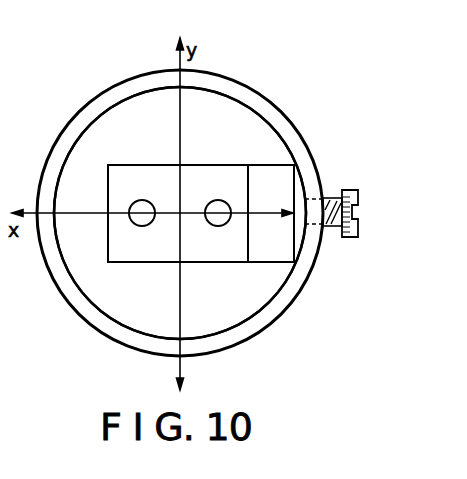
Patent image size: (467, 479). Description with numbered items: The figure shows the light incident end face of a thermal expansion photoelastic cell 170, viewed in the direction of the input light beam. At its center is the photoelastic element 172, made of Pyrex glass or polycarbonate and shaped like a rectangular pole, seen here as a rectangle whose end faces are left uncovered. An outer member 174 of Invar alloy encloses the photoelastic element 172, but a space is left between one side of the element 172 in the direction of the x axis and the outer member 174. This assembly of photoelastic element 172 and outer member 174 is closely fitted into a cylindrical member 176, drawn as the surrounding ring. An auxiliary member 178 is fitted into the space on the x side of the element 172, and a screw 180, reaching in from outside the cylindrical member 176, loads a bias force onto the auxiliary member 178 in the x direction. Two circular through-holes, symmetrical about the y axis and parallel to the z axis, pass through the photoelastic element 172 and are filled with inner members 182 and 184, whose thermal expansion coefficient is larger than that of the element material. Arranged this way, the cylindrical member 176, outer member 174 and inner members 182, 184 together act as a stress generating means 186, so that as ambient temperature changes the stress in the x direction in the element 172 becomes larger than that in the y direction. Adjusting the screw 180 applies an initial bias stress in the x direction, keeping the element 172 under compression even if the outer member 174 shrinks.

The thermal expansion photoelastic cell 170 is at (256, 90).
The photoelastic element 172 is at (158, 255).
The outer member 174 is at (240, 307).
The cylindrical member 176 is at (56, 275).
The auxiliary member 178 is at (276, 250).
The screw 180 is at (350, 187).
The inner member 182 is at (143, 205).
The inner member 184 is at (220, 205).
The stress generating means 186 is at (107, 291).